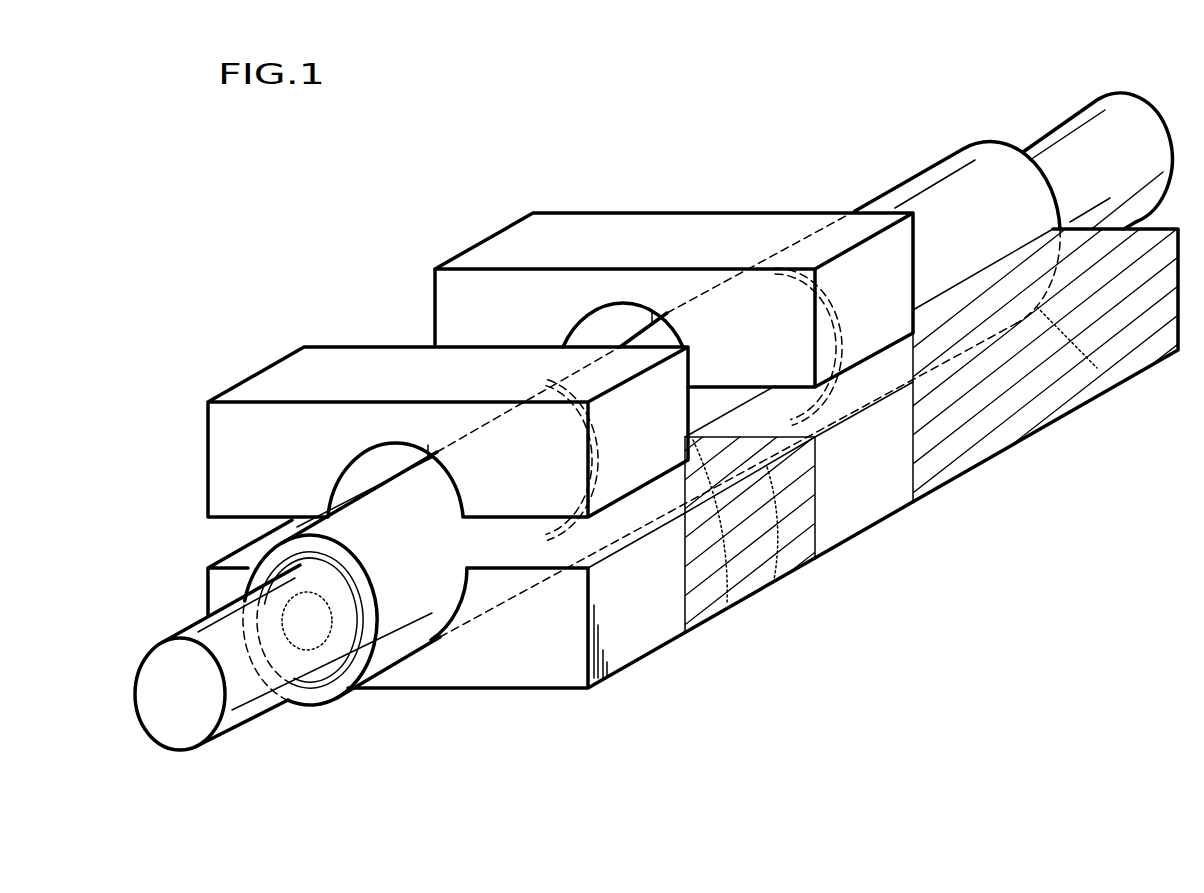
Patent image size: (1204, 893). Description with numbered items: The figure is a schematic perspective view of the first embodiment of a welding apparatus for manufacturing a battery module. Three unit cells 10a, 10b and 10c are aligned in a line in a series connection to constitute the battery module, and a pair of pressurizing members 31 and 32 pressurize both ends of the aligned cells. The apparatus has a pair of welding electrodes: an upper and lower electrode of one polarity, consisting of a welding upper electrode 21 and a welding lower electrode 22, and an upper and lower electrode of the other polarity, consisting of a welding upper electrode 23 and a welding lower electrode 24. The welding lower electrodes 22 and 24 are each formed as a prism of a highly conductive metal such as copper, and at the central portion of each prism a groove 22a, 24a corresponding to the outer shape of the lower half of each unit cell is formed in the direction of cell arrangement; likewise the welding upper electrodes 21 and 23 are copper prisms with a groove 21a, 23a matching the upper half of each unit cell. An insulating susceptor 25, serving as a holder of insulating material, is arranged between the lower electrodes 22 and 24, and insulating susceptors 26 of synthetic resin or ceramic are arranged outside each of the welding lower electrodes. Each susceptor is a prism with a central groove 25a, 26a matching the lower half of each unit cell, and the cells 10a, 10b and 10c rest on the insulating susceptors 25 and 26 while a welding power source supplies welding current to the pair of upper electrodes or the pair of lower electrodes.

The unit cell 10a is at (388, 653).
The unit cell 10b is at (715, 403).
The unit cell 10c is at (930, 183).
The welding upper electrode 21 is at (328, 360).
The groove 21a is at (358, 472).
The welding lower electrode 22 is at (550, 675).
The groove 22a is at (460, 605).
The welding upper electrode 23 is at (572, 230).
The groove 23a is at (607, 327).
The welding lower electrode 24 is at (867, 507).
The groove 24a is at (733, 603).
The insulating susceptor 25 is at (698, 605).
The groove 25a is at (777, 580).
The insulating susceptor 26 is at (1065, 405).
The groove 26a is at (1097, 368).
The pressurizing member 31 is at (208, 627).
The pressurizing member 32 is at (1080, 135).